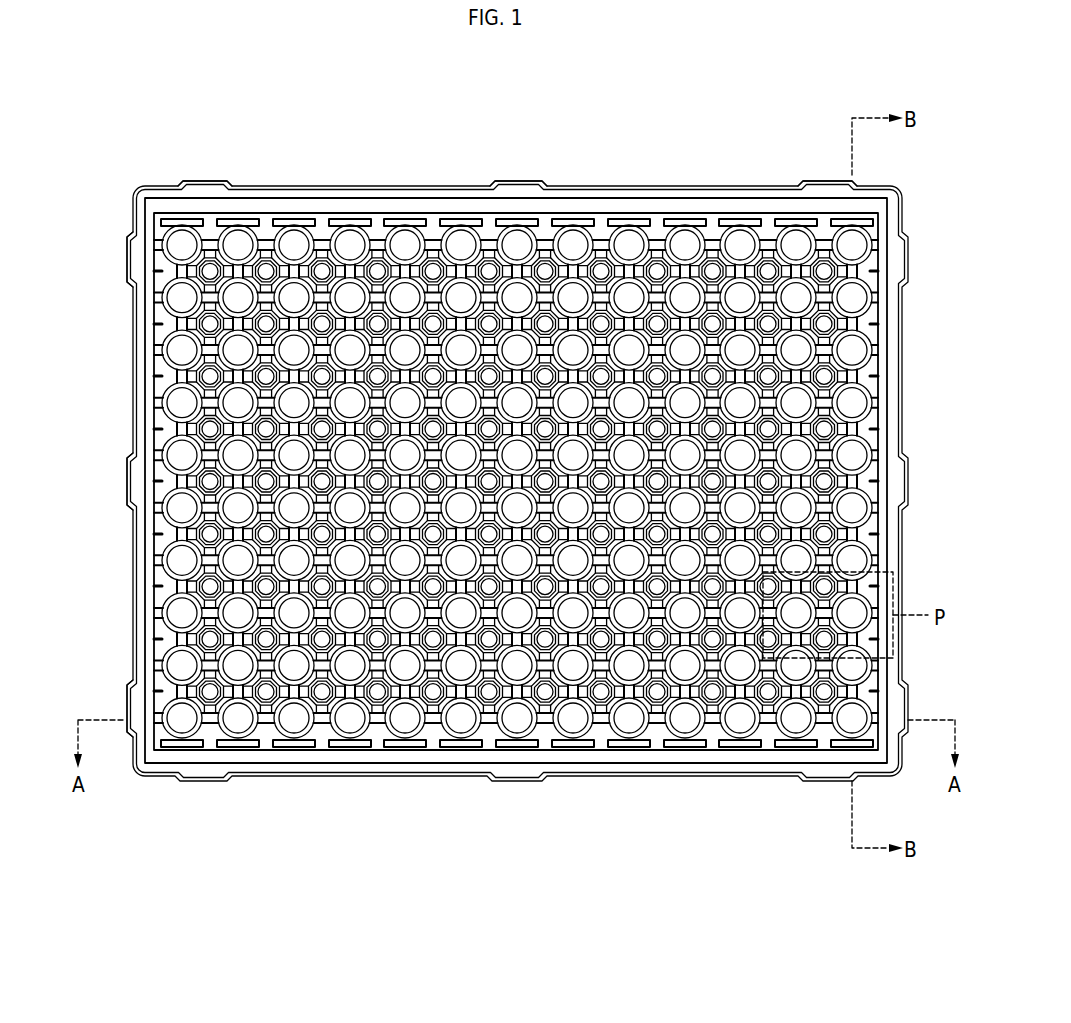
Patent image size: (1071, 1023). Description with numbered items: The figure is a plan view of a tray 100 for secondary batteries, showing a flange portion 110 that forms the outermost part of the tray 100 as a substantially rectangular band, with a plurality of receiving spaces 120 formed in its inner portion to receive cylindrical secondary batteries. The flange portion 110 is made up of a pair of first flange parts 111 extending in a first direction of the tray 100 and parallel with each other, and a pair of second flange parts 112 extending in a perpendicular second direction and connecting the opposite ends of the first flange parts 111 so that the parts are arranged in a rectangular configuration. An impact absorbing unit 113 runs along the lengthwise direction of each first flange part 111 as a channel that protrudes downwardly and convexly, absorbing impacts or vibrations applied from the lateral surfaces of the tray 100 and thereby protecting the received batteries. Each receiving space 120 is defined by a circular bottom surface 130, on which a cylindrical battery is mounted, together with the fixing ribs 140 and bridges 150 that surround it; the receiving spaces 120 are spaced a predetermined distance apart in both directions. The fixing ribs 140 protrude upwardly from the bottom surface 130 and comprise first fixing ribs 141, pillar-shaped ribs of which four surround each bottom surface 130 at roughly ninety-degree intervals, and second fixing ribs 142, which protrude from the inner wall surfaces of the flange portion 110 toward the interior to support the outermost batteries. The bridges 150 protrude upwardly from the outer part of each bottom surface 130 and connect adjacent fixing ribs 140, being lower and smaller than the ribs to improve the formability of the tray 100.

The tray 100 is at (78, 76).
The flange portion 110 is at (232, 122).
The first flange parts 111 is at (244, 197).
The second flange parts 112 is at (133, 298).
The impact absorbing unit 113 is at (337, 206).
The receiving spaces 120 is at (515, 668).
The bottom surface 130 is at (473, 694).
The fixing ribs 140 is at (516, 545).
The first fixing ribs 141 is at (639, 682).
The second fixing ribs 142 is at (685, 746).
The bridges 150 is at (444, 639).